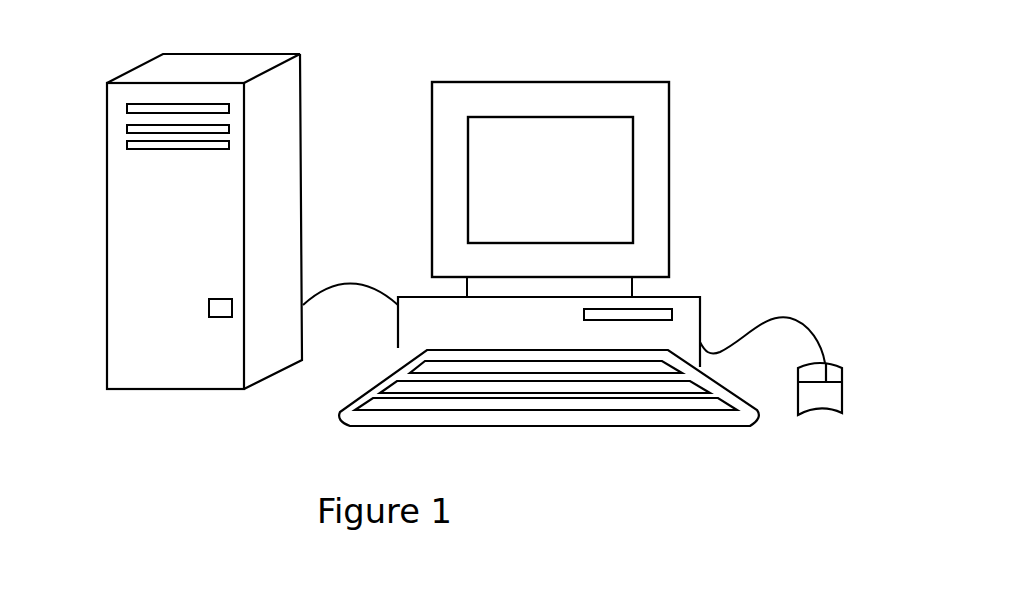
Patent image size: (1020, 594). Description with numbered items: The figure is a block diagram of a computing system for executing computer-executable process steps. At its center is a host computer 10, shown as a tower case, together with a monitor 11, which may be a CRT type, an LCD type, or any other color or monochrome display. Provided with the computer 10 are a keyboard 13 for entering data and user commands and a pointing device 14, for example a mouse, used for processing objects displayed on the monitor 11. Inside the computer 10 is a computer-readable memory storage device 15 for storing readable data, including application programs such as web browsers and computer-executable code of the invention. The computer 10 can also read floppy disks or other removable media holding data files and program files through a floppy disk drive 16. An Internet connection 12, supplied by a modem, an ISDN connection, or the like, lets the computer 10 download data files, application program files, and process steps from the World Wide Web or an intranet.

The host computer 10 is at (669, 107).
The monitor 11 is at (532, 132).
The Internet connection 12 is at (217, 317).
The keyboard 13 is at (615, 408).
The pointing device 14 is at (842, 378).
The computer-readable memory storage device 15 is at (212, 115).
The floppy disk drive 16 is at (153, 148).